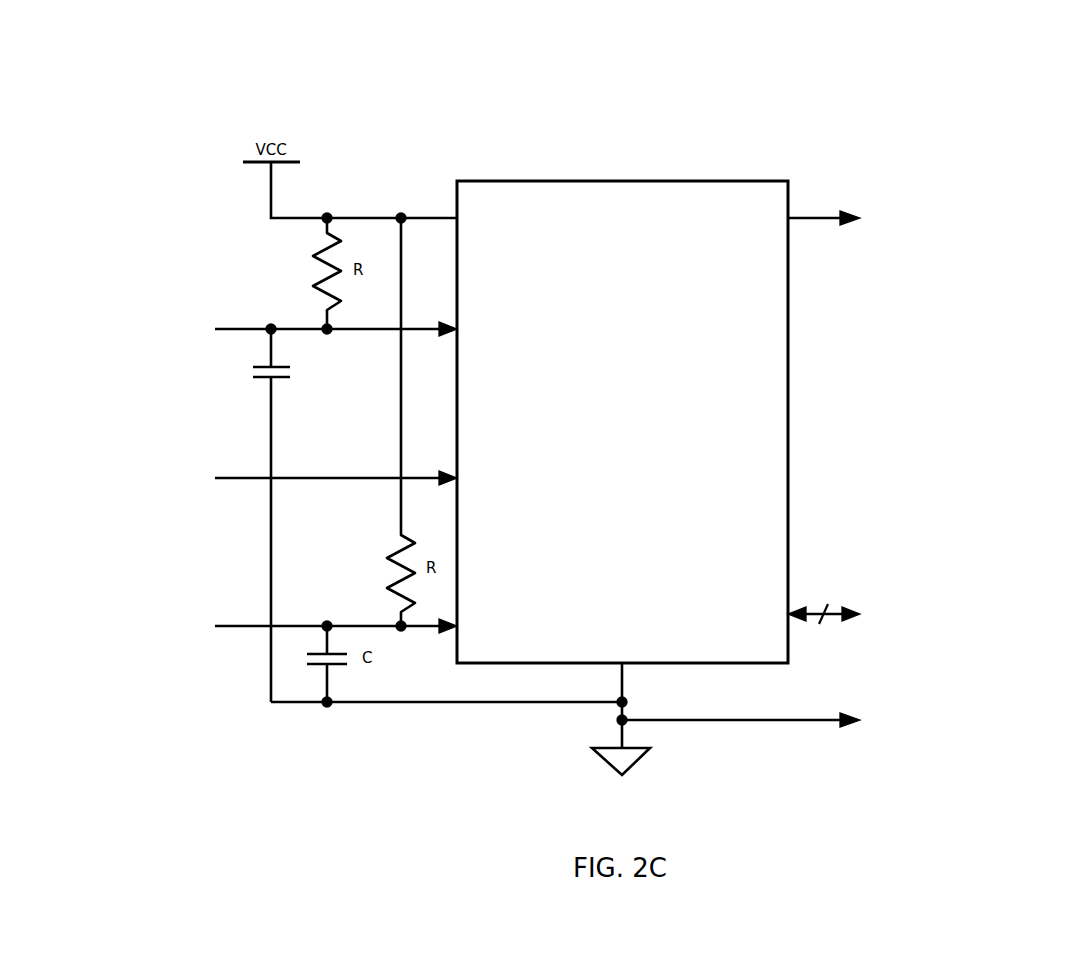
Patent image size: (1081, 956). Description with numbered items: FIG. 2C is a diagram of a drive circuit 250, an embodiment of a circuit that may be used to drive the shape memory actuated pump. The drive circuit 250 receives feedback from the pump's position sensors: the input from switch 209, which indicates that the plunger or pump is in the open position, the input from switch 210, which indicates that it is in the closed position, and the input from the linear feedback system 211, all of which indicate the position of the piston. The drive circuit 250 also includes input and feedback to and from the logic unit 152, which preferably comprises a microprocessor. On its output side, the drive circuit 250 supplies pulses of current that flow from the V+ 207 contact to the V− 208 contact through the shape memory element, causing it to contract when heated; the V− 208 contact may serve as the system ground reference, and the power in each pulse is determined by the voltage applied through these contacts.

The drive circuit 250 is at (872, 97).
The V+ contact 207 is at (854, 217).
The switch 209 is at (275, 327).
The linear feedback system 211 is at (282, 478).
The switch 210 is at (275, 626).
The logic unit 152 is at (864, 614).
The V− contact 208 is at (765, 719).